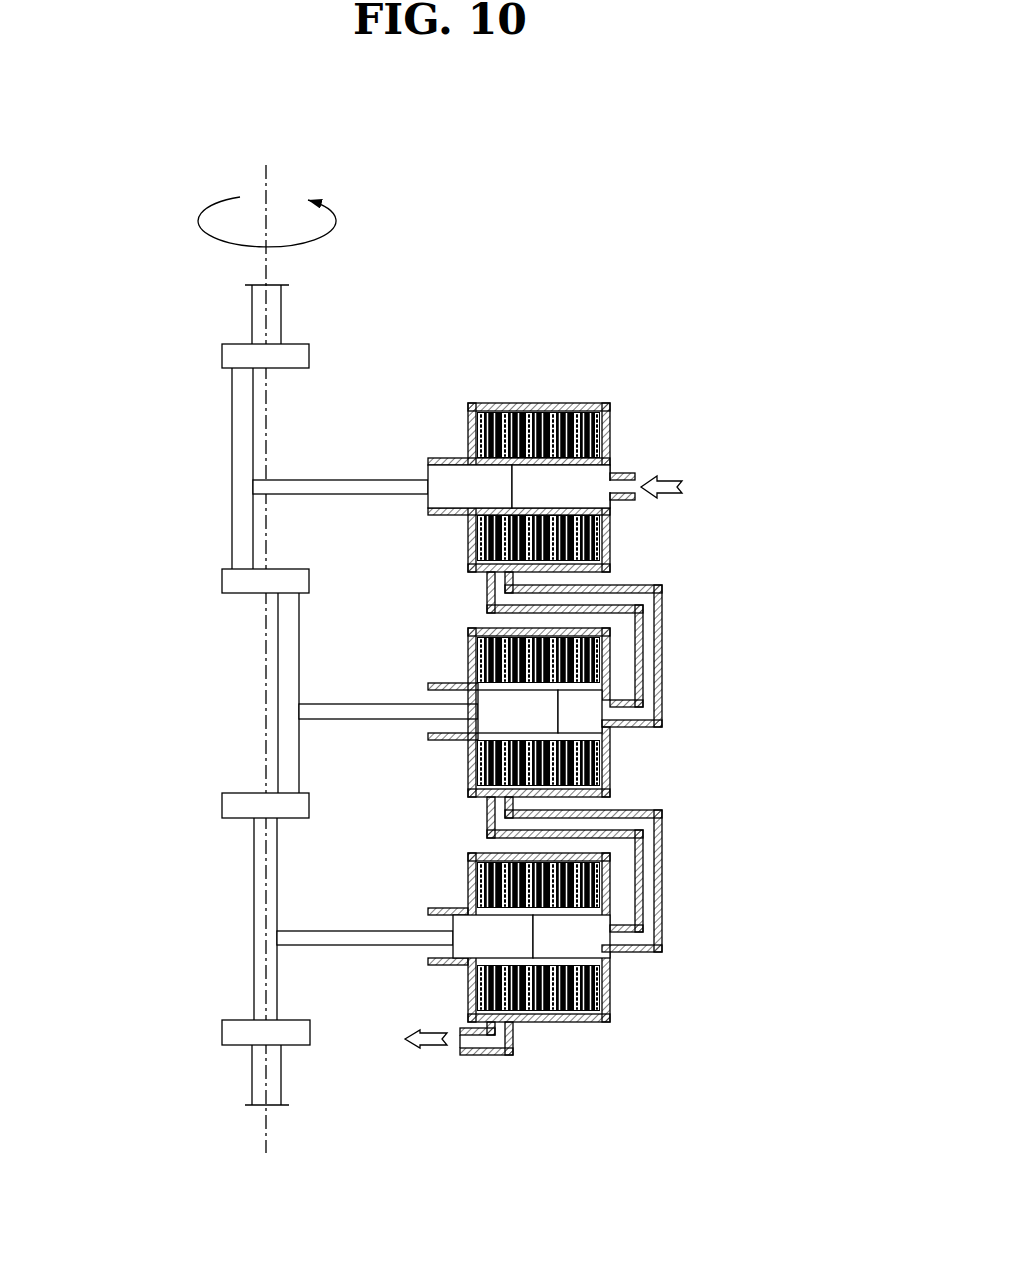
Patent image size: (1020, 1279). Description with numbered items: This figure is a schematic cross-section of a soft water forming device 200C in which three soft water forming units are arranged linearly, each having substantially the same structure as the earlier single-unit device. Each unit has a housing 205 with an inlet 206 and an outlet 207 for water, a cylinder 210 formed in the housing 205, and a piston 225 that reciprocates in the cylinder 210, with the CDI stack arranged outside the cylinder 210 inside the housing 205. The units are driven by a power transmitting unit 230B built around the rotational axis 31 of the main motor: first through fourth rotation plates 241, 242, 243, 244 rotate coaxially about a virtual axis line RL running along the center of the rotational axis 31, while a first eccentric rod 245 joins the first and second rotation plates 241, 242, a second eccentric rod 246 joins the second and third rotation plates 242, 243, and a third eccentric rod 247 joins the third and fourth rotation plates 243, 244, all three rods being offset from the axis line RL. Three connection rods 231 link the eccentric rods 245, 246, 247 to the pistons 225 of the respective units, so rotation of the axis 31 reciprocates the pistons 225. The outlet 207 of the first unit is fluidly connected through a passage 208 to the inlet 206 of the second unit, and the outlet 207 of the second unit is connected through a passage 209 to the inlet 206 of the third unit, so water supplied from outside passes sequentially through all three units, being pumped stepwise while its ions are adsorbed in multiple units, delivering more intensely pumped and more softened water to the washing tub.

The axis line RL is at (267, 173).
The soft water forming device 200C is at (581, 640).
The power transmitting unit 230B is at (299, 699).
The rotational axis 31 is at (260, 318).
The first rotation plate 241 is at (232, 353).
The second rotation plate 242 is at (255, 583).
The third rotation plate 243 is at (255, 804).
The fourth rotation plate 244 is at (232, 1030).
The first eccentric rod 245 is at (242, 437).
The second eccentric rod 246 is at (292, 668).
The third eccentric rod 247 is at (263, 902).
The connection rod 231 is at (305, 486).
The housing 205 is at (600, 1022).
The inlet 206 is at (620, 477).
The outlet 207 is at (487, 582).
The connecting pipe 208 is at (663, 643).
The connecting pipe 209 is at (663, 888).
The cylinder 210 is at (562, 505).
The piston 225 is at (445, 478).